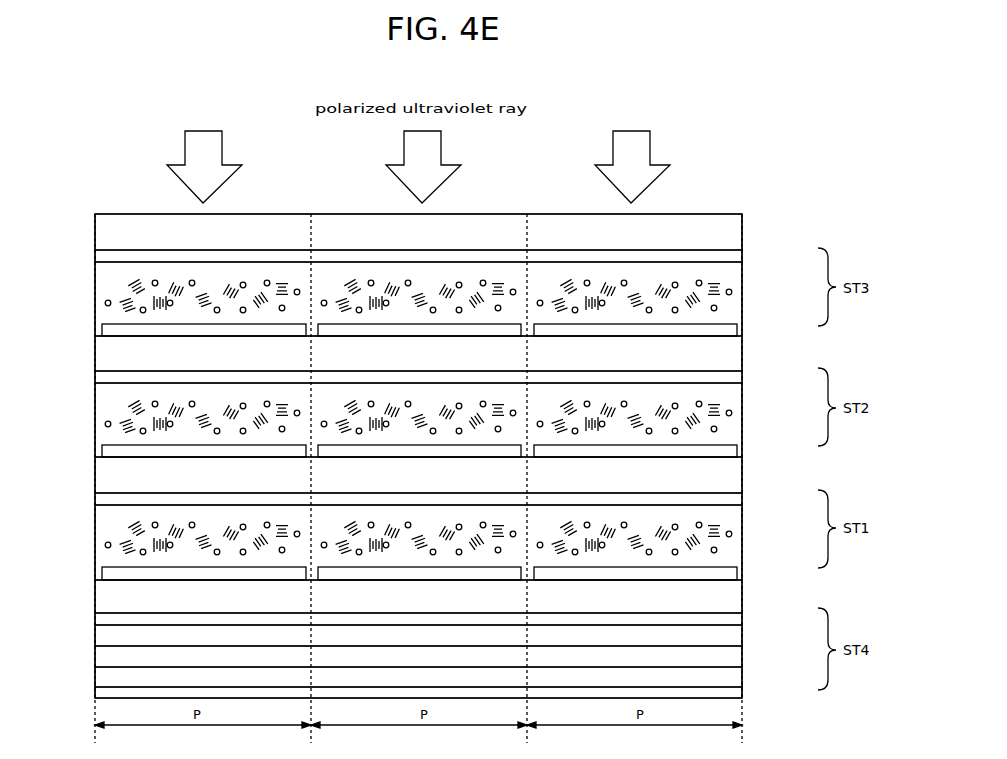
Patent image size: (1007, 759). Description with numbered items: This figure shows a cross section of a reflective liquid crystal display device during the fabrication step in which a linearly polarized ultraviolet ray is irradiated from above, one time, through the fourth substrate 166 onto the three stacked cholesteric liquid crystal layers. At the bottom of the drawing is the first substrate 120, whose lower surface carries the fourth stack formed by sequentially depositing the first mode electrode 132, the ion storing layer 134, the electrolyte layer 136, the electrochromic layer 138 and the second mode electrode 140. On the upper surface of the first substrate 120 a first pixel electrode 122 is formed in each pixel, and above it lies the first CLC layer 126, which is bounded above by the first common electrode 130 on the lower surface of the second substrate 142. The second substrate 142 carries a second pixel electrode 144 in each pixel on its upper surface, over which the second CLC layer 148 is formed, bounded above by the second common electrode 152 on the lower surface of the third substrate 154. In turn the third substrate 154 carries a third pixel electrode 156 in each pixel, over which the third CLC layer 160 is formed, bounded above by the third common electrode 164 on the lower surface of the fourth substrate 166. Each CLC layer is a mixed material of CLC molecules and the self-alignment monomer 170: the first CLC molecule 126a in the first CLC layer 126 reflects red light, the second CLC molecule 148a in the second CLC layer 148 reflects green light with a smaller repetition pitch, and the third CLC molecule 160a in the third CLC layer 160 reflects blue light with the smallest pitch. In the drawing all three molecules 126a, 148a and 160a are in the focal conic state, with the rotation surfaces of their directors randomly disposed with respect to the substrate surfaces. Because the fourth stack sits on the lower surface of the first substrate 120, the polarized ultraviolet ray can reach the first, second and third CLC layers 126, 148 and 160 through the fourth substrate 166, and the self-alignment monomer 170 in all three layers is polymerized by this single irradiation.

The fourth substrate 166 is at (721, 240).
The third common electrode 164 is at (742, 250).
The third CLC layer 160 is at (742, 290).
The third pixel electrode 156 is at (737, 328).
The third substrate 154 is at (721, 360).
The second common electrode 152 is at (742, 371).
The second CLC layer 148 is at (742, 410).
The second pixel electrode 144 is at (737, 449).
The second substrate 142 is at (721, 480).
The first common electrode 130 is at (742, 493).
The first CLC layer 126 is at (742, 530).
The first pixel electrode 122 is at (737, 570).
The first substrate 120 is at (721, 601).
The first mode electrode 132 is at (742, 613).
The ion storing layer 134 is at (742, 636).
The electrolyte layer 136 is at (742, 656).
The electrochromic layer 138 is at (742, 676).
The second mode electrode 140 is at (742, 694).
The third CLC molecule 160a is at (143, 283).
The second CLC molecule 148a is at (143, 404).
The first CLC molecule 126a is at (143, 525).
The self-alignment monomer 170 is at (128, 318).